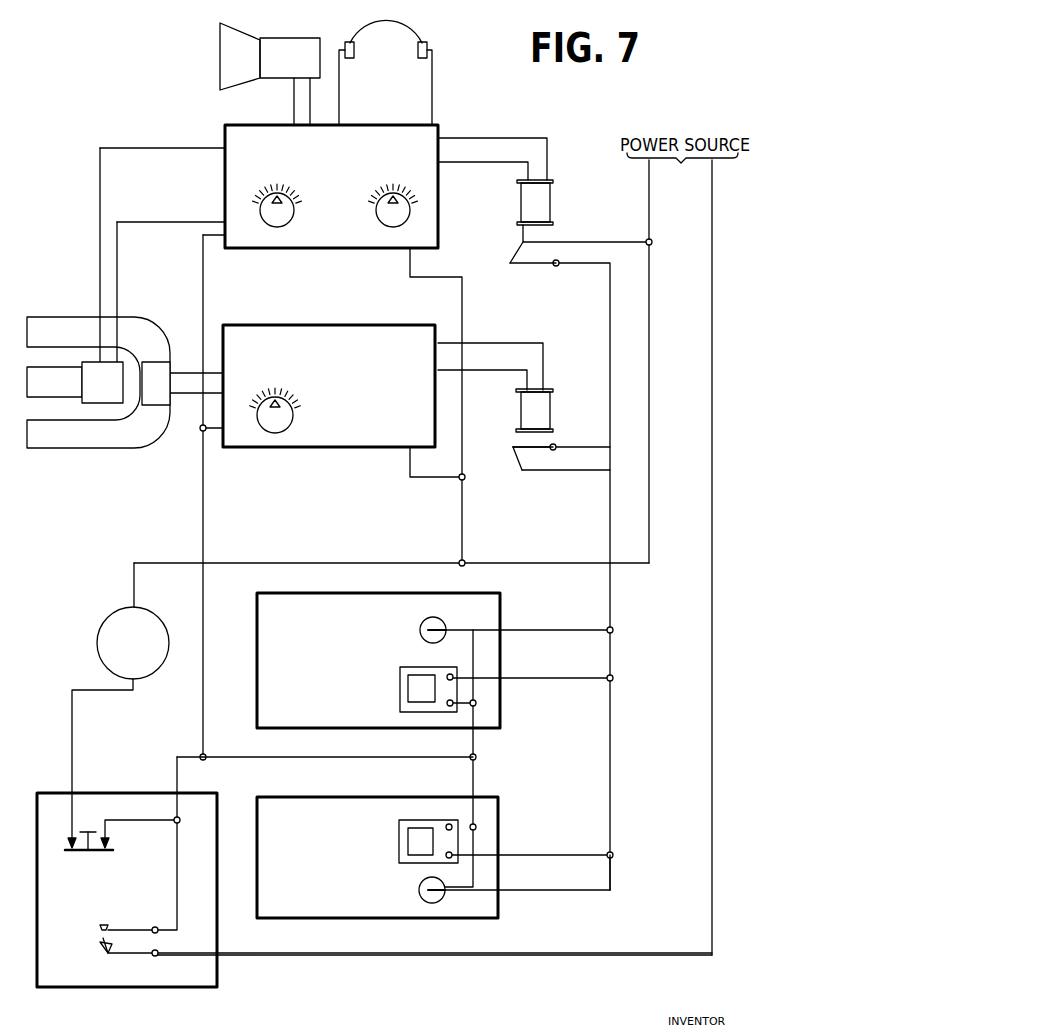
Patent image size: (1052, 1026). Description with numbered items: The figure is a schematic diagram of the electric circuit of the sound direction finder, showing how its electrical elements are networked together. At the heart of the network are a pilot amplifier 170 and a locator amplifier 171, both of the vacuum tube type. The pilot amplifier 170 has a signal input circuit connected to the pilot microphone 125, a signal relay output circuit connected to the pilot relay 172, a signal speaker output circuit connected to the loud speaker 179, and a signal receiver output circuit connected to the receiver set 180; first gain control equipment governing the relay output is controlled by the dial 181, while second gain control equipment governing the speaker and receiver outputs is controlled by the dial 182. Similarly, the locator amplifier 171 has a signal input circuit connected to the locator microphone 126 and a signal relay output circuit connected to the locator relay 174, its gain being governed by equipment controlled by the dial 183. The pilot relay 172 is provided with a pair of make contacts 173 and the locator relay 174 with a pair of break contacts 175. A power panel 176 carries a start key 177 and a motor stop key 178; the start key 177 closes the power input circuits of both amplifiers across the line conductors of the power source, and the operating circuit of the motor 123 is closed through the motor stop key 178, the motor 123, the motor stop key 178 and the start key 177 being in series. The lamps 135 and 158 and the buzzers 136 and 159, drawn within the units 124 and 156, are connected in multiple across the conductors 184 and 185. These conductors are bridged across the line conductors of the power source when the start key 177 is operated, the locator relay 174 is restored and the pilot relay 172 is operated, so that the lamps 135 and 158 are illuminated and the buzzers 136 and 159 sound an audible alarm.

The motor 123 is at (133, 643).
The pilot relay unit 124 is at (378, 660).
The pilot microphone 125 is at (98, 382).
The locator microphone 126 is at (156, 383).
The lamp 135 is at (423, 623).
The buzzer 136 is at (402, 678).
The locator relay unit 156 is at (377, 857).
The lamp 158 is at (423, 887).
The buzzer 159 is at (402, 837).
The pilot amplifier 170 is at (318, 246).
The locator amplifier 171 is at (328, 447).
The pilot relay 172 is at (530, 203).
The make contacts 173 is at (522, 254).
The locator relay 174 is at (530, 413).
The break contacts 175 is at (518, 456).
The power panel 176 is at (200, 977).
The start key 177 is at (106, 942).
The motor stop key 178 is at (104, 843).
The loud speaker 179 is at (312, 58).
The receiver set 180 is at (421, 33).
The dial 181 is at (272, 218).
The dial 182 is at (388, 218).
The dial 183 is at (288, 417).
The conductor 184 is at (434, 757).
The conductor 185 is at (611, 845).